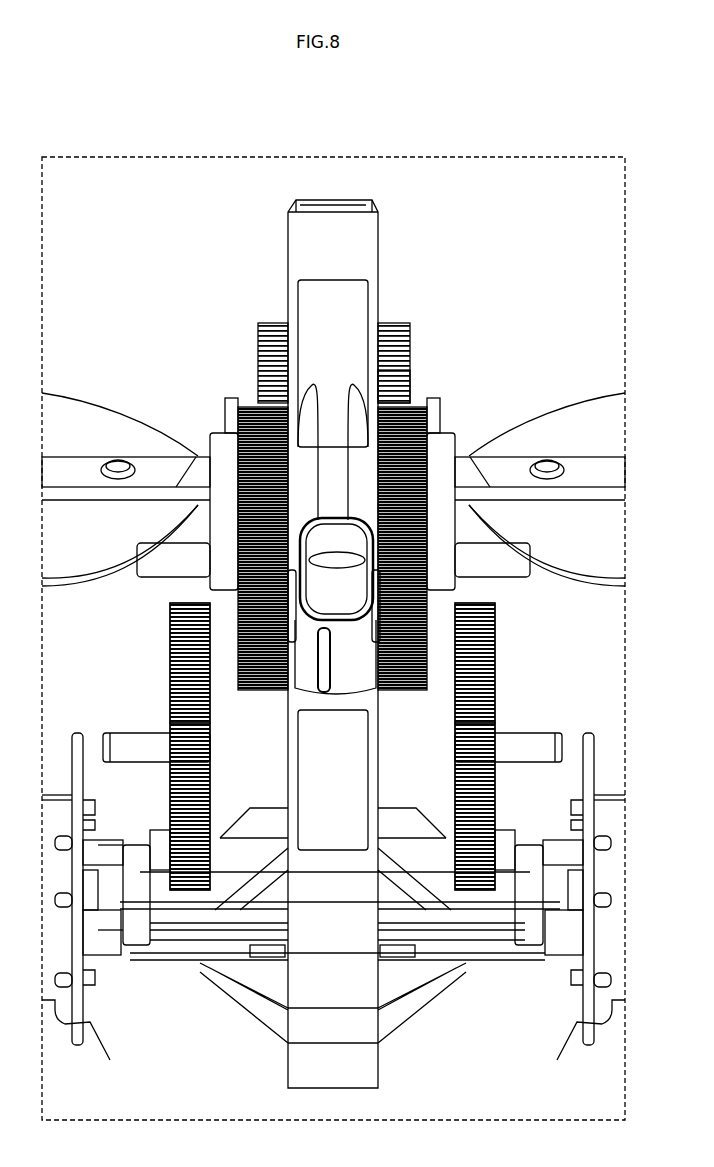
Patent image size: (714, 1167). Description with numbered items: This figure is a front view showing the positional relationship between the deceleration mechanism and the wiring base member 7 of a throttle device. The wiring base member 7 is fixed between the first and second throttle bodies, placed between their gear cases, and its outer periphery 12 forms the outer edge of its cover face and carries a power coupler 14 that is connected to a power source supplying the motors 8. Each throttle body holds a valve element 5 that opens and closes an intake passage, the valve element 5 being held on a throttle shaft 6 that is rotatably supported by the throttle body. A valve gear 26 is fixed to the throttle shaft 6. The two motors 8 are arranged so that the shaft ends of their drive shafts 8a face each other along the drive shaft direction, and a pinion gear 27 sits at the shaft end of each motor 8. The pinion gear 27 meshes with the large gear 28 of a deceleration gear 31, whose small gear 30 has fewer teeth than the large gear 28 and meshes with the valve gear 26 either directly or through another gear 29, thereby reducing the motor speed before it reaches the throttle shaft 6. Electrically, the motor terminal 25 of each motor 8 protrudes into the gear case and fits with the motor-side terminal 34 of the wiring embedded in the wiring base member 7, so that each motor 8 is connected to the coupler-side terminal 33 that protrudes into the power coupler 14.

The valve element 5 is at (68, 412).
The throttle shaft 6 is at (165, 470).
The wiring base member 7 is at (378, 262).
The motor 8 is at (95, 1060).
The drive shaft 8a is at (142, 900).
The outer periphery 12 is at (345, 243).
The power coupler 14 is at (300, 388).
The motor terminal 25 is at (150, 945).
The valve gear 26 is at (258, 337).
The pinion gear 27 is at (158, 840).
The large gear 28 is at (170, 705).
The another gear 29 is at (210, 603).
The small gear 30 is at (170, 656).
The deceleration gear 31 is at (88, 696).
The coupler-side terminal 33 is at (395, 368).
The motor-side terminal 34 is at (225, 972).